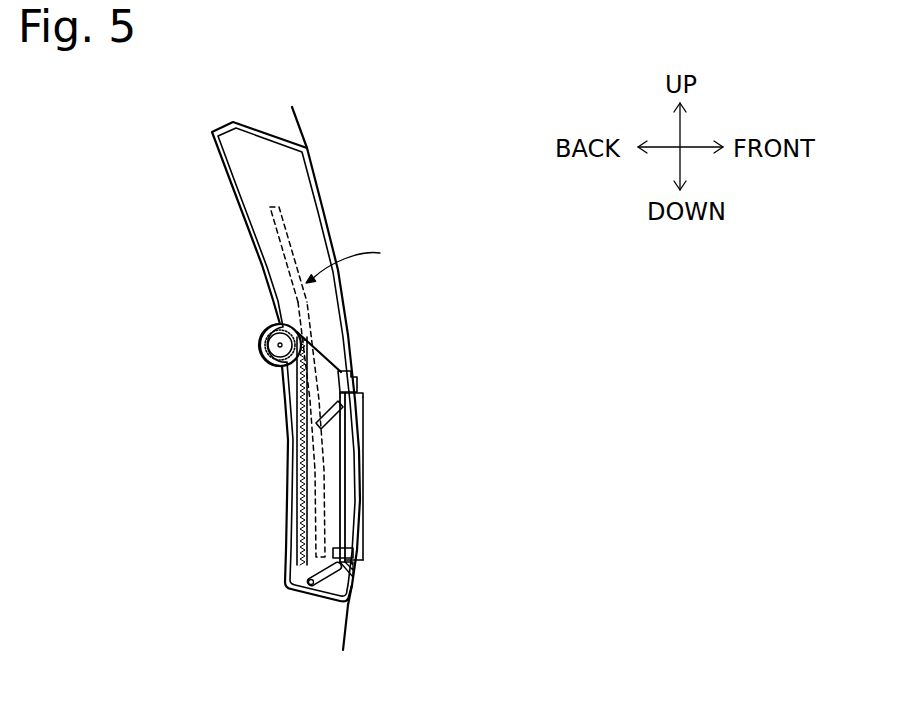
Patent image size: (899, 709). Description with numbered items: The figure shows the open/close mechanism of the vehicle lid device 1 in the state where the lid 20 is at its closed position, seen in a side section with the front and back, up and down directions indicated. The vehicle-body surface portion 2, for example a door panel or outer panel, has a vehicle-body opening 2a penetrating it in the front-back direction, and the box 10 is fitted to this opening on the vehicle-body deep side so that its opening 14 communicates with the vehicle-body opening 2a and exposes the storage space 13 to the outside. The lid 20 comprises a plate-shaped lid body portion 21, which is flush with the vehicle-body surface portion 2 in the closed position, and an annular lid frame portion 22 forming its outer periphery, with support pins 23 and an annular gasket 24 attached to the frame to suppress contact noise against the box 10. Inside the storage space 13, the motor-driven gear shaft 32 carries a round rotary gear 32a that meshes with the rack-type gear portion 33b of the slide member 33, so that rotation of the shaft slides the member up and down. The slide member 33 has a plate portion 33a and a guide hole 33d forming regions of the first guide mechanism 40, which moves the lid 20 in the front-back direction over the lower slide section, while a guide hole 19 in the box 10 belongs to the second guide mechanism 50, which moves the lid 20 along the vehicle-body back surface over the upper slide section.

The vehicle lid device 1 is at (345, 588).
The vehicle-body surface portion 2 is at (290, 123).
The vehicle-body opening 2a is at (357, 391).
The box 10 is at (215, 143).
The storage space 13 is at (298, 184).
The opening 14 is at (356, 557).
The guide hole 19 is at (263, 243).
The lid 20 is at (411, 478).
The lid body portion 21 is at (362, 445).
The lid frame portion 22 is at (338, 378).
The support pin 23 is at (338, 396).
The gasket 24 is at (352, 371).
The gear shaft 32 is at (266, 350).
The rotary gear 32a is at (272, 327).
The slide member 33 is at (331, 356).
The plate portion 33a is at (333, 483).
The gear portion 33b is at (300, 527).
The guide hole 33d is at (289, 576).
The first guide mechanism 40 is at (311, 559).
The second guide mechanism 50 is at (361, 261).